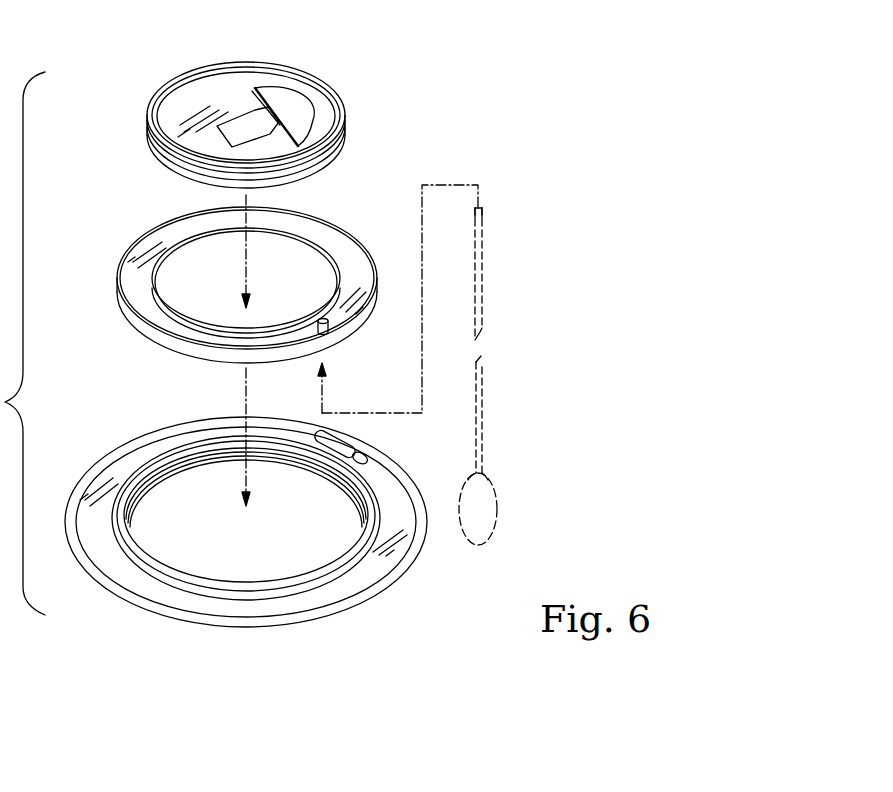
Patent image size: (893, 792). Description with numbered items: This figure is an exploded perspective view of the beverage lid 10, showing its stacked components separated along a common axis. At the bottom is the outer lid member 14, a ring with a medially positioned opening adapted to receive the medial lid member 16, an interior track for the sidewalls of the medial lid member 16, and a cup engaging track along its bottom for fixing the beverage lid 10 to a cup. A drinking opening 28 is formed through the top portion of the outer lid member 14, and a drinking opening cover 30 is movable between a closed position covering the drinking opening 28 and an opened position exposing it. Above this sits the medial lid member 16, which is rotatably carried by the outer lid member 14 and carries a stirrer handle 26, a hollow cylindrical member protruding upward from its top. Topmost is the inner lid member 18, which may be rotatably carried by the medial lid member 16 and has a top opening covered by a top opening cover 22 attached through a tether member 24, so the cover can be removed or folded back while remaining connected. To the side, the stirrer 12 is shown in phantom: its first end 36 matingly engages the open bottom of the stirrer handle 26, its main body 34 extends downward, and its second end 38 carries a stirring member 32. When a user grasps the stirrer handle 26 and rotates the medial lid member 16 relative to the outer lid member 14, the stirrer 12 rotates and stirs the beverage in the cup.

The beverage lid 10 is at (466, 109).
The stirrer 12 is at (529, 359).
The outer lid member 14 is at (360, 604).
The medial lid member 16 is at (333, 222).
The inner lid member 18 is at (343, 99).
The top opening cover 22 is at (286, 106).
The tether member 24 is at (243, 124).
The stirrer handle 26 is at (332, 316).
The drinking opening 28 is at (368, 456).
The drinking opening cover 30 is at (352, 442).
The stirring member 32 is at (496, 492).
The main body 34 is at (482, 298).
The first end 36 is at (484, 207).
The second end 38 is at (500, 523).